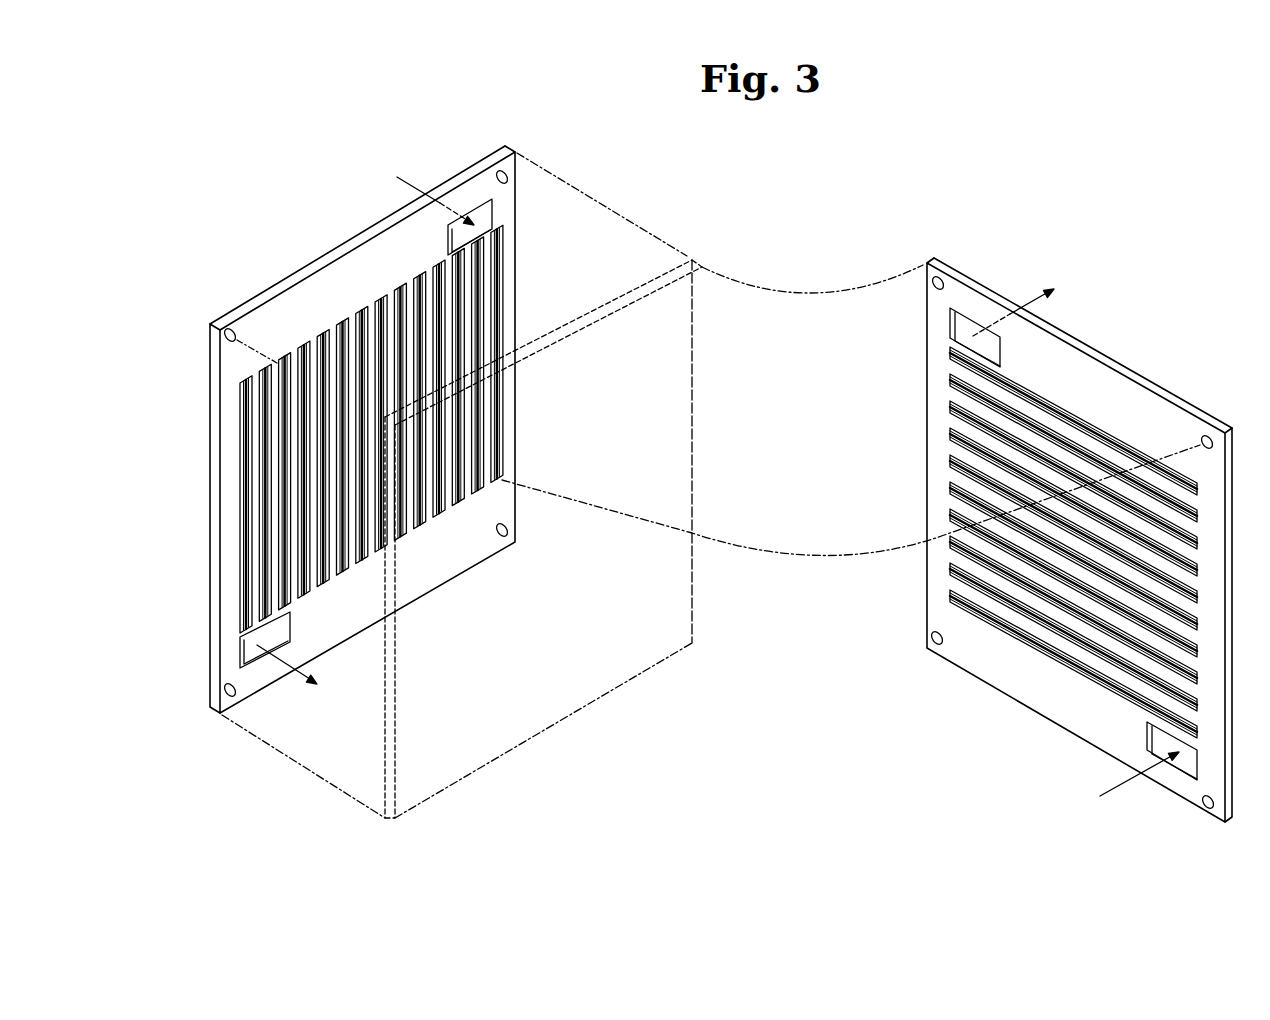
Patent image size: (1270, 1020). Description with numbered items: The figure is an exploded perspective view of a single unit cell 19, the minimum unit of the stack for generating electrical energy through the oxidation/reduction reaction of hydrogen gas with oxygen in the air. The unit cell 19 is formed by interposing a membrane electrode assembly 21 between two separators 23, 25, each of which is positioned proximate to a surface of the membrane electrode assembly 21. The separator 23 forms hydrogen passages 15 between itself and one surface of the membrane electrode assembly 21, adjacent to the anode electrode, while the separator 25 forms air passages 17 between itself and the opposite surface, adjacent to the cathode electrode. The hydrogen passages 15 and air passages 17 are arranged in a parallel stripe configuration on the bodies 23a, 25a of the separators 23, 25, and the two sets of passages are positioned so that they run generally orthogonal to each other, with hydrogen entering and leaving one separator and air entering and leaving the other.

The unit cell 19 is at (862, 146).
The separator 23 is at (343, 228).
The body 23a is at (308, 274).
The hydrogen passage 15 is at (243, 464).
The membrane electrode assembly 21 is at (598, 708).
The separator 25 is at (1115, 334).
The body 25a is at (1155, 390).
The air passage 17 is at (982, 624).